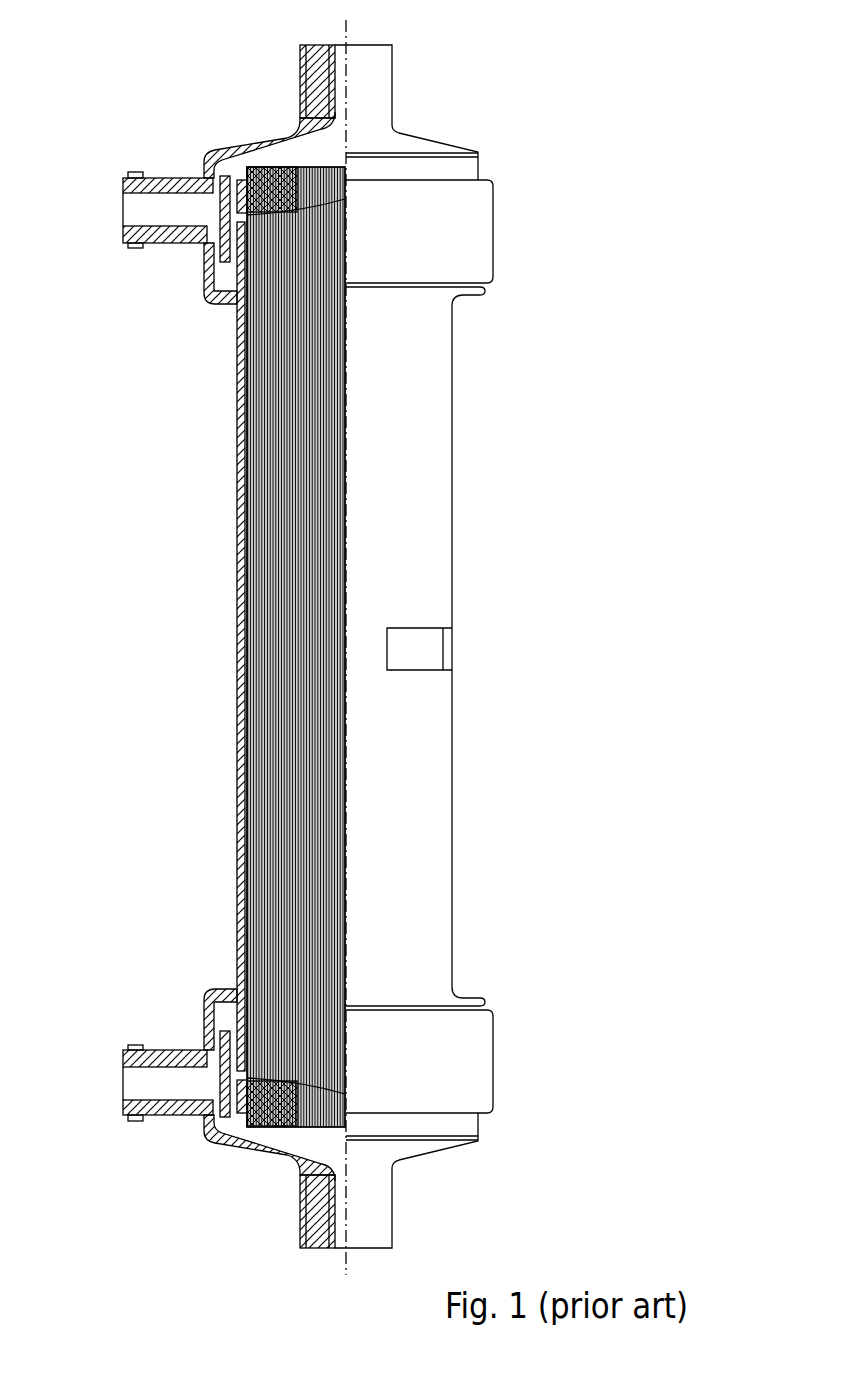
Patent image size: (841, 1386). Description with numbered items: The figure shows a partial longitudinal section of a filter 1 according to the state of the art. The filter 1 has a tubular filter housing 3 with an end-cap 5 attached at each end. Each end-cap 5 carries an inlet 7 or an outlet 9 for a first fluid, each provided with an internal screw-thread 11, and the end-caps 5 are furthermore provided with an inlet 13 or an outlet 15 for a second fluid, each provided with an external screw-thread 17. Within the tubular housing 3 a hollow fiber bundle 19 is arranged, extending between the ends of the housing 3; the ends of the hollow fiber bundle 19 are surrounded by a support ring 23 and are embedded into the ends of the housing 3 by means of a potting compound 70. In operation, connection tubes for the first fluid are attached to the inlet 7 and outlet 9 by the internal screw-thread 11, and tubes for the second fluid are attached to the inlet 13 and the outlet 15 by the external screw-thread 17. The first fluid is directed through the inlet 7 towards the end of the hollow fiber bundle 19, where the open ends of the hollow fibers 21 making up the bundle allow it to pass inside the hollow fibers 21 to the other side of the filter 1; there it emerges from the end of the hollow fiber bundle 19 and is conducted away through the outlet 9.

The filter 1 is at (570, 106).
The tubular filter housing 3 is at (418, 452).
The end-cap 5 is at (455, 225).
The inlet 7 is at (373, 70).
The outlet 9 is at (365, 1196).
The internal screw-thread 11 is at (313, 70).
The inlet 13 is at (160, 1116).
The outlet 15 is at (163, 246).
The external screw-thread 17 is at (135, 176).
The hollow fiber bundle 19 is at (278, 573).
The hollow fibers 21 is at (275, 738).
The support ring 23 is at (218, 178).
The potting compound 70 is at (262, 175).